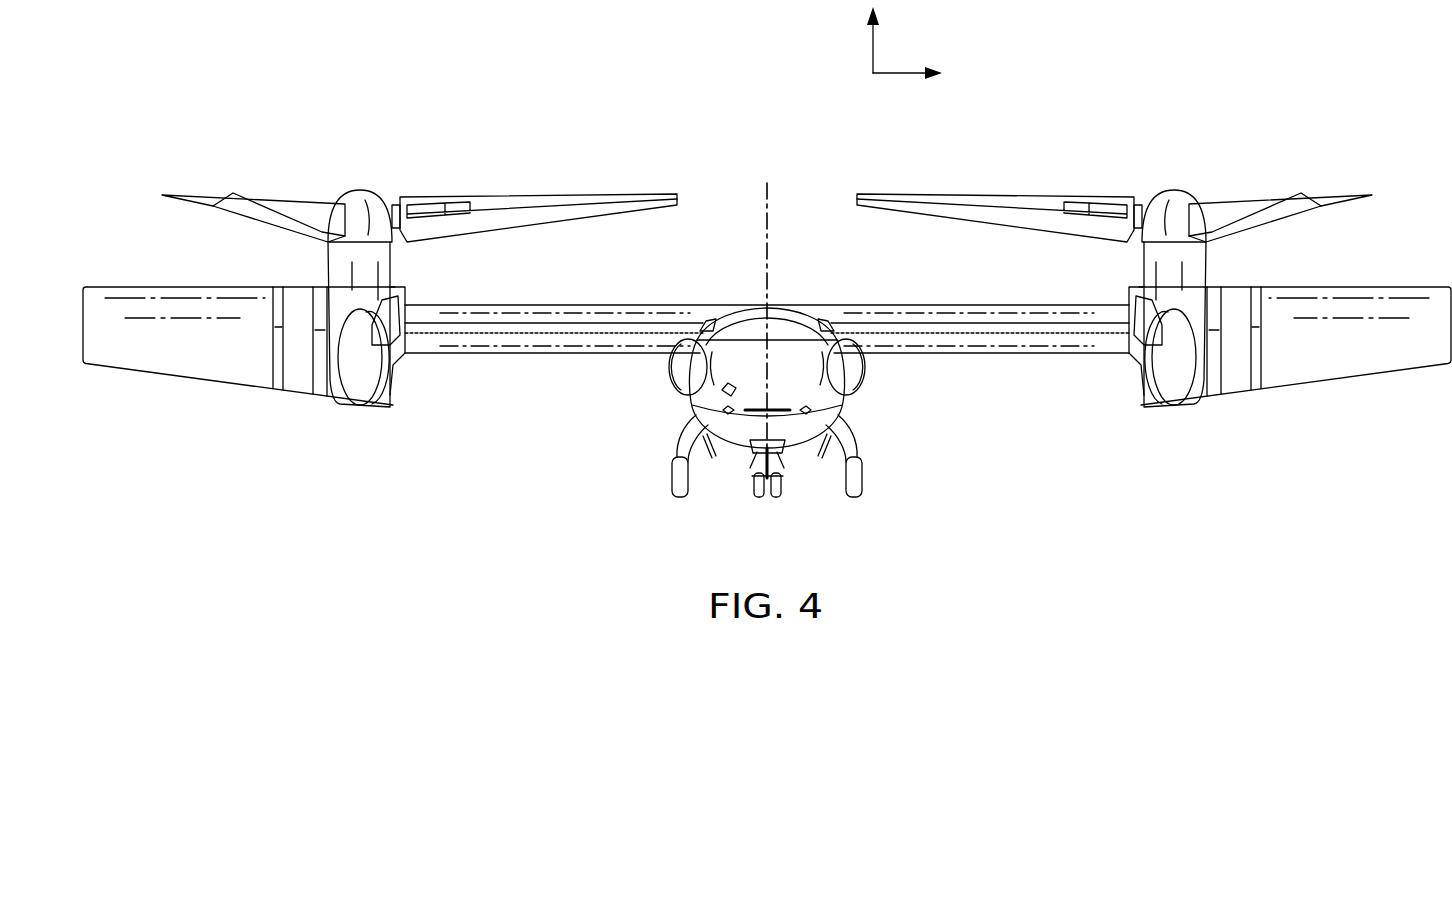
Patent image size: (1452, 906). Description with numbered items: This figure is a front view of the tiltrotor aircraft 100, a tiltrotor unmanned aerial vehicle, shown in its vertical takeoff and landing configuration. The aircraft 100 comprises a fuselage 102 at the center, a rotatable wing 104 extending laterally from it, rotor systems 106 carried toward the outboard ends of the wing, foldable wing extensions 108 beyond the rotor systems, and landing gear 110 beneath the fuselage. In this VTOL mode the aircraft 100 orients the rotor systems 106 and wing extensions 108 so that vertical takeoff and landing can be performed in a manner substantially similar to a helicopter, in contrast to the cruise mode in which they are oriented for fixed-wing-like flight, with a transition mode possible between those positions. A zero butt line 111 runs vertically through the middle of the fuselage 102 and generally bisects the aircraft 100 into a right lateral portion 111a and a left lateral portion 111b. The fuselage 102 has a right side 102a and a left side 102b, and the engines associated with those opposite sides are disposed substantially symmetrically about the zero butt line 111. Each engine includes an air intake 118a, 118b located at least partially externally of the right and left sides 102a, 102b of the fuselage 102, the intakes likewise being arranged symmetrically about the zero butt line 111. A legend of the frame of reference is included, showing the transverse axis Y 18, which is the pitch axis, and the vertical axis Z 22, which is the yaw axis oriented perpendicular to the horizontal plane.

The tiltrotor aircraft 100 is at (583, 96).
The fuselage 102 is at (690, 405).
The right side of the fuselage 102a is at (855, 428).
The left side of the fuselage 102b is at (680, 428).
The rotatable wing 104 is at (520, 355).
The rotor system 106 is at (345, 164).
The foldable wing extension 108 is at (173, 378).
The landing gear 110 is at (672, 482).
The zero butt line 111 is at (770, 268).
The right lateral portion 111a is at (1008, 280).
The left lateral portion 111b is at (585, 280).
The air intake 118a is at (865, 370).
The air intake 118b is at (670, 372).
The transverse axis Y 18 is at (898, 75).
The vertical axis Z 22 is at (873, 47).